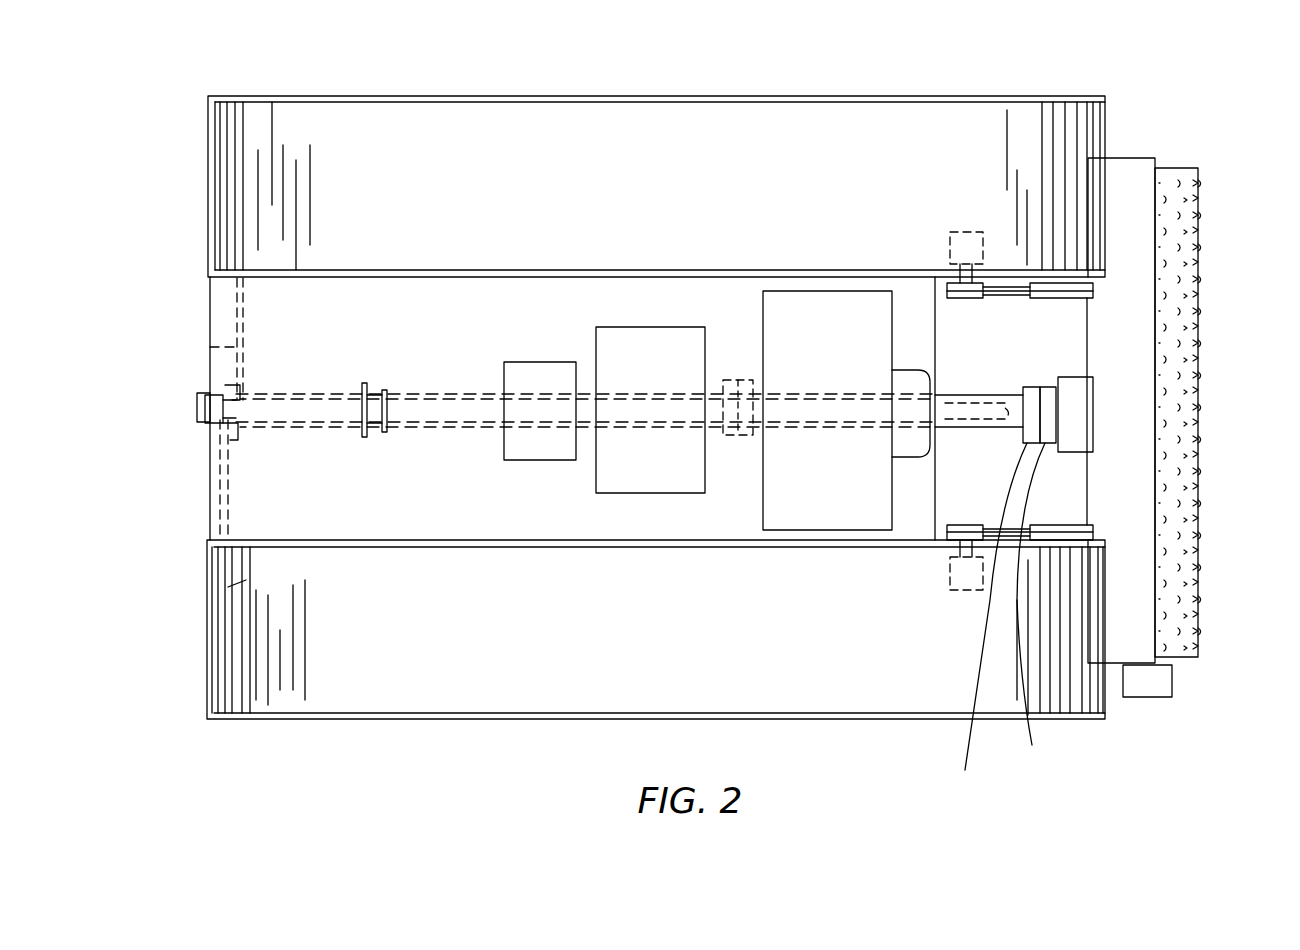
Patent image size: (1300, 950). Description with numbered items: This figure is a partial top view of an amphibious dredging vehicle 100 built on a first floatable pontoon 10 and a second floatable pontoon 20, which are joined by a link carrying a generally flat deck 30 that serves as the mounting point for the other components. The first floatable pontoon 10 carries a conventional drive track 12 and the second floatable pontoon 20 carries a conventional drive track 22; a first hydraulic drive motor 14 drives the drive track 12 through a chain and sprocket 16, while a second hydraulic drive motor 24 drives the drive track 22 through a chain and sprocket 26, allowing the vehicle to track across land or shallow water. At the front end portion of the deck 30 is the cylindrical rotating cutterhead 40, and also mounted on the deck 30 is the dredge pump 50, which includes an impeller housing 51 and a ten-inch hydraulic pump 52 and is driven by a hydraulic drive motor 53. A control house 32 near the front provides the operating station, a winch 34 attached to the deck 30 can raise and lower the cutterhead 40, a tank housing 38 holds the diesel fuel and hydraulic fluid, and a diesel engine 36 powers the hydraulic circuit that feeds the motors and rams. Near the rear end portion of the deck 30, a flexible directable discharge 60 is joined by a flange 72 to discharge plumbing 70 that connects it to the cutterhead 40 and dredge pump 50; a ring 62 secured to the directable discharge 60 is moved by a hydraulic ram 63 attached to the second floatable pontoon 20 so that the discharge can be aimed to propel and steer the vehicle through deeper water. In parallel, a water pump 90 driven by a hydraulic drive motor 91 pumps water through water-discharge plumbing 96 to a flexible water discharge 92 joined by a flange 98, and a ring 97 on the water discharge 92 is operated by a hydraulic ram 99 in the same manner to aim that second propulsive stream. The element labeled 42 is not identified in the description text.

The amphibious dredging vehicle 100 is at (138, 151).
The first floatable pontoon 10 is at (400, 86).
The drive track 12 is at (257, 118).
The first hydraulic drive motor 14 is at (955, 232).
The chain and sprocket 16 is at (1063, 305).
The second floatable pontoon 20 is at (333, 724).
The drive track 22 is at (262, 665).
The second hydraulic drive motor 24 is at (952, 590).
The chain and sprocket 26 is at (1077, 520).
The deck 30 is at (208, 312).
The control house 32 is at (808, 531).
The winch 34 is at (906, 458).
The diesel engine 36 is at (627, 494).
The tank housing 38 is at (532, 461).
The cutterhead 40 is at (1130, 158).
The connector block 42 is at (1158, 697).
The dredge pump 50 is at (1065, 507).
The impeller housing 51 is at (1092, 410).
The ten-inch hydraulic pump 52 is at (1032, 613).
The hydraulic drive motor 53 is at (988, 626).
The directable discharge 60 is at (197, 410).
The ring 62 is at (190, 432).
The hydraulic ram 63 is at (220, 468).
The discharge plumbing 70 is at (400, 440).
The flange 72 is at (363, 383).
The water pump 90 is at (748, 378).
The hydraulic drive motor 91 is at (730, 378).
The water discharge 92 is at (197, 403).
The water-discharge plumbing 96 is at (478, 393).
The ring 97 is at (222, 392).
The flange 98 is at (400, 390).
The hydraulic ram 99 is at (210, 347).